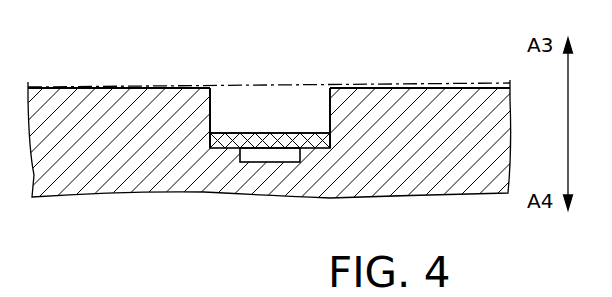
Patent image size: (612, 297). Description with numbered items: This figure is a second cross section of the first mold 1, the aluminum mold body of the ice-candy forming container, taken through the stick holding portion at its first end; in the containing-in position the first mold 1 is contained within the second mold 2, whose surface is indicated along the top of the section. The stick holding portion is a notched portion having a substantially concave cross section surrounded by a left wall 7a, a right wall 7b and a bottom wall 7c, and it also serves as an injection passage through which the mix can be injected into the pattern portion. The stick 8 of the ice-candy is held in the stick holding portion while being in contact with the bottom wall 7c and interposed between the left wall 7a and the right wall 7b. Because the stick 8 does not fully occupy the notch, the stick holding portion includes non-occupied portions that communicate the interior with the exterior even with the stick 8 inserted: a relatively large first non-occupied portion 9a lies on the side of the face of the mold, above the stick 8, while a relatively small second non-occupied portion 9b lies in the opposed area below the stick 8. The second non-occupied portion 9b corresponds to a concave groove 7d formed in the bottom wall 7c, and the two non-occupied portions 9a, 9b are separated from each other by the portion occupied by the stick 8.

The first mold 1 is at (155, 88).
The second mold 2 is at (110, 88).
The left wall 7a is at (213, 88).
The right wall 7b is at (340, 88).
The bottom wall 7c is at (311, 131).
The concave groove 7d is at (270, 153).
The stick 8 is at (251, 133).
The first non-occupied portion 9a is at (287, 98).
The second non-occupied portion 9b is at (262, 194).